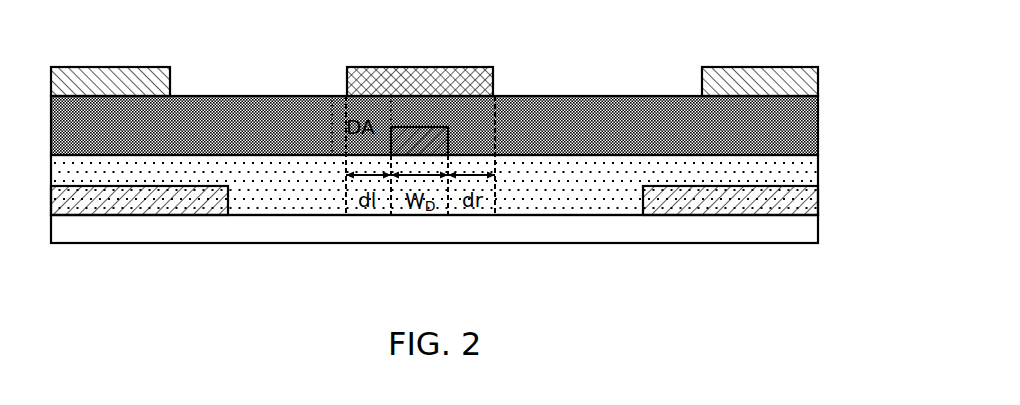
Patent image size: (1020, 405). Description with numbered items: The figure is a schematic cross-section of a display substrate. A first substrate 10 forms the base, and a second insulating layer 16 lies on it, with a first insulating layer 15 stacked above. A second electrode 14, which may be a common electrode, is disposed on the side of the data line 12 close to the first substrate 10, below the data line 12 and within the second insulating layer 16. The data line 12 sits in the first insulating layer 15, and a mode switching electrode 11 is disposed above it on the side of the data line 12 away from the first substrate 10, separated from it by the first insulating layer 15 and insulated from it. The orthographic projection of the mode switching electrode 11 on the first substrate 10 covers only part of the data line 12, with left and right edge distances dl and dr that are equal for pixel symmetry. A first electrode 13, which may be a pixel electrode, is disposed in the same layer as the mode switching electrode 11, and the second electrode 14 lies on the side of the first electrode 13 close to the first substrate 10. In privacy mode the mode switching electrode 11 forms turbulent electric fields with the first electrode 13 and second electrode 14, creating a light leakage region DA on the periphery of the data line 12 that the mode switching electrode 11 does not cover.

The first substrate 10 is at (434, 259).
The mode switching electrode 11 is at (420, 52).
The data line 12 is at (445, 81).
The first electrode 13 is at (434, 51).
The second electrode 14 is at (434, 111).
The first insulating layer 15 is at (434, 81).
The second insulating layer 16 is at (434, 229).